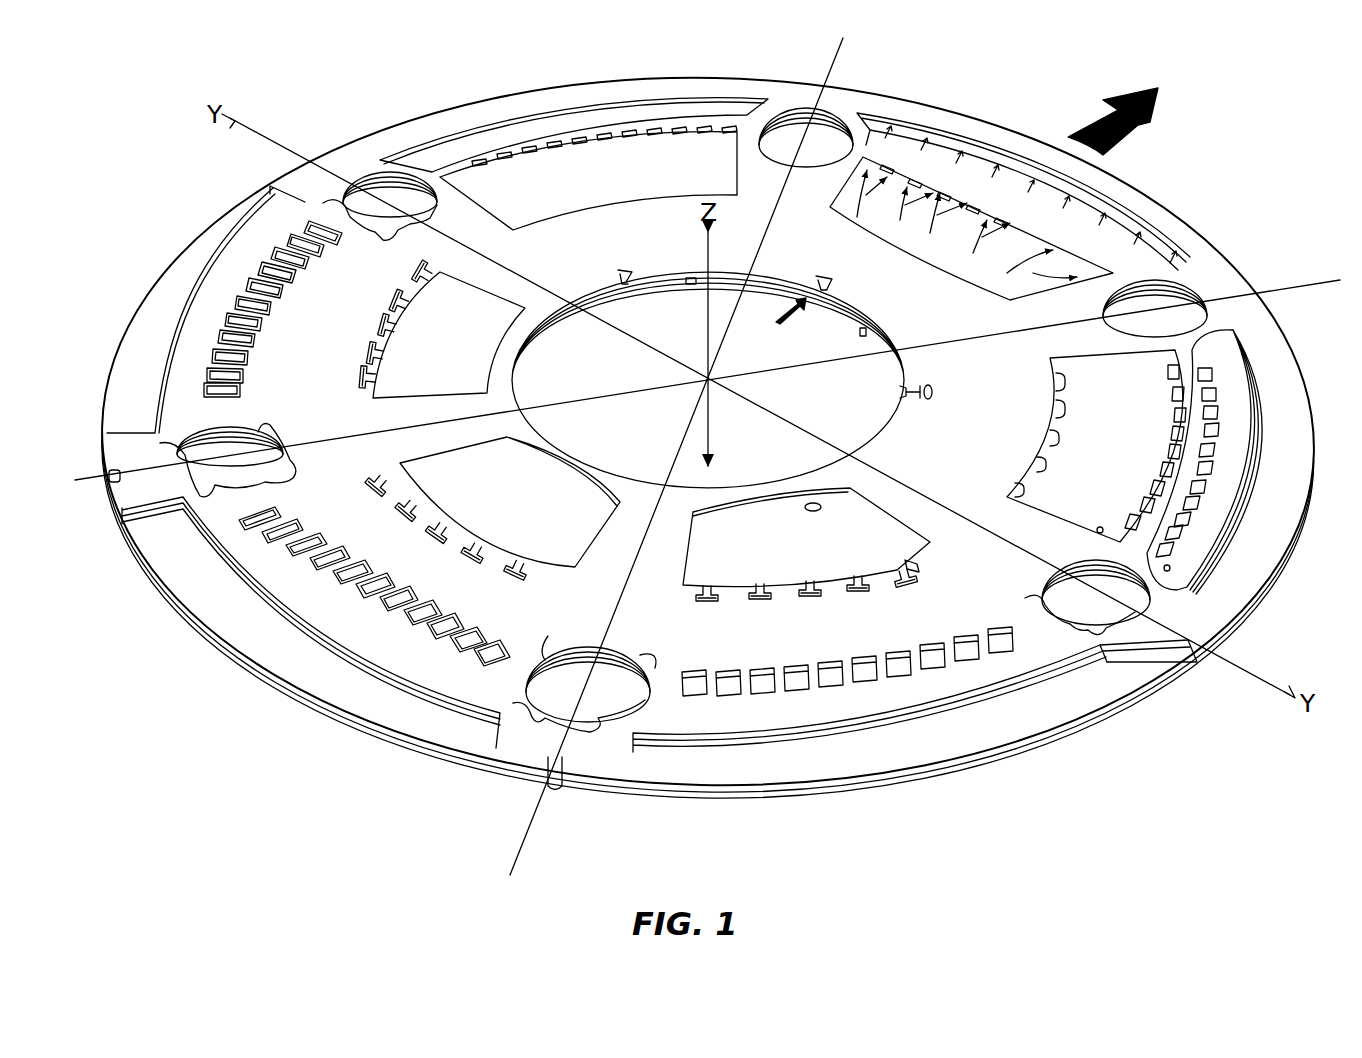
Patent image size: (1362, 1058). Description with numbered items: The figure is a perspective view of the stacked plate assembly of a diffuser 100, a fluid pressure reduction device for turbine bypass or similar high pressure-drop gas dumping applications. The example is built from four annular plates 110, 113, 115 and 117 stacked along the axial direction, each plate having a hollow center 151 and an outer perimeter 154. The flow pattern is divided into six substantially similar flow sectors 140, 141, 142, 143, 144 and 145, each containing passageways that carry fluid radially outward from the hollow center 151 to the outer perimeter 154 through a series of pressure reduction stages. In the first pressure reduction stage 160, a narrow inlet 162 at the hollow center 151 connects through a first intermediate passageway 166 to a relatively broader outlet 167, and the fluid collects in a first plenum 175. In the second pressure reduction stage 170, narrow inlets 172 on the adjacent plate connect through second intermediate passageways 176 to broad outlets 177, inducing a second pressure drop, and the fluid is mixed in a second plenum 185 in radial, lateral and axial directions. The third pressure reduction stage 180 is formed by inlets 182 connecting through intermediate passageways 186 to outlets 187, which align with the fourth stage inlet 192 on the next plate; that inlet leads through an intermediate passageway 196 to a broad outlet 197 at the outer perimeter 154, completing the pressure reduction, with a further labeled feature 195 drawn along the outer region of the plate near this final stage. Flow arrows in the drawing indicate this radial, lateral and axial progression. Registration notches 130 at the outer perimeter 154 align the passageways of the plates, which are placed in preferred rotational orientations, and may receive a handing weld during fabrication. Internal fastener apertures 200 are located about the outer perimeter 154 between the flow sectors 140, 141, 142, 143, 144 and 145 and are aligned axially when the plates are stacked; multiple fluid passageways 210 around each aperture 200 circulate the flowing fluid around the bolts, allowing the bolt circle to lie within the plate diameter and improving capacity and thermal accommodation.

The diffuser 100 is at (708, 469).
The annular plate 110 is at (708, 469).
The annular plate 113 is at (765, 782).
The annular plate 115 is at (880, 788).
The annular plate 117 is at (963, 770).
The registration notch 130 is at (558, 795).
The flow sector 140 is at (1094, 446).
The flow sector 141 is at (890, 260).
The flow sector 142 is at (608, 249).
The flow sector 143 is at (330, 345).
The flow sector 144 is at (372, 535).
The flow sector 145 is at (812, 561).
The hollow center 151 is at (553, 343).
The outer perimeter 154 is at (397, 756).
The first pressure reduction stage 160 is at (888, 457).
The inlet 162 is at (903, 393).
The first intermediate passageway 166 is at (920, 384).
The outlet 167 is at (934, 398).
The second pressure reduction stage 170 is at (817, 583).
The inlet 172 is at (887, 568).
The first plenum 175 is at (708, 538).
The second intermediate passageway 176 is at (918, 575).
The outlet 177 is at (893, 588).
The third pressure reduction stage 180 is at (854, 679).
The inlet 182 is at (698, 672).
The second plenum 185 is at (1135, 453).
The intermediate passageway 186 is at (1012, 634).
The outlet 187 is at (698, 703).
The inlet 192 is at (1103, 692).
The channel 195 is at (1195, 553).
The intermediate passageway 196 is at (1108, 650).
The outlet 197 is at (1133, 680).
The fastener aperture 200 is at (647, 486).
The fluid passageway 210 is at (545, 640).